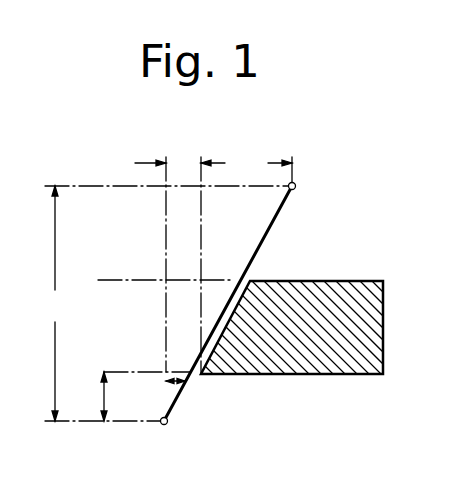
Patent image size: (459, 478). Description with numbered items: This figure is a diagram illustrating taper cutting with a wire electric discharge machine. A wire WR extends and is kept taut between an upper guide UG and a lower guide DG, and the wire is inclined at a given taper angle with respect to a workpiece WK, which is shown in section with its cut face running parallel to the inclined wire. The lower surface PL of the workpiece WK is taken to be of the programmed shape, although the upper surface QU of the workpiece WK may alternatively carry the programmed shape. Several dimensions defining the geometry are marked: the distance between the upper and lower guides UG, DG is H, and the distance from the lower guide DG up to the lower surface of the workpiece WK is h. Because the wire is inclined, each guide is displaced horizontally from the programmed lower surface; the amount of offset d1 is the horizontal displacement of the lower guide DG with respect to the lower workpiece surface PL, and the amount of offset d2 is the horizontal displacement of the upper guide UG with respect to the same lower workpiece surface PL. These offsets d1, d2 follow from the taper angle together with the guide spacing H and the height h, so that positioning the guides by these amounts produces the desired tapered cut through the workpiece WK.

The wire WR is at (272, 224).
The upper guide UG is at (295, 184).
The lower guide DG is at (167, 424).
The workpiece WK is at (347, 376).
The upper surface of the workpiece QU is at (251, 279).
The lower surface of the workpiece PL is at (202, 376).
The distance between the upper and lower guides H is at (55, 303).
The distance from the lower guide to the lower surface of the workpiece h is at (110, 396).
The amount of offset of the lower guide d1 is at (173, 163).
The amount of offset of the upper guide d2 is at (246, 163).